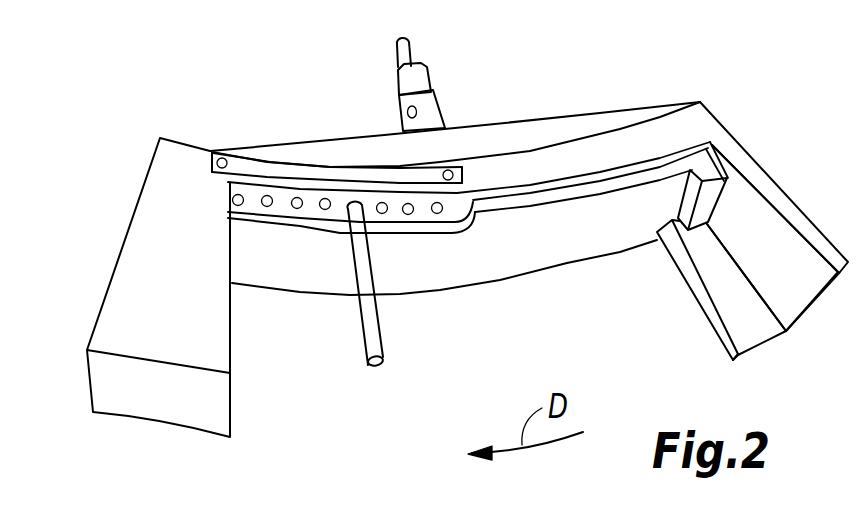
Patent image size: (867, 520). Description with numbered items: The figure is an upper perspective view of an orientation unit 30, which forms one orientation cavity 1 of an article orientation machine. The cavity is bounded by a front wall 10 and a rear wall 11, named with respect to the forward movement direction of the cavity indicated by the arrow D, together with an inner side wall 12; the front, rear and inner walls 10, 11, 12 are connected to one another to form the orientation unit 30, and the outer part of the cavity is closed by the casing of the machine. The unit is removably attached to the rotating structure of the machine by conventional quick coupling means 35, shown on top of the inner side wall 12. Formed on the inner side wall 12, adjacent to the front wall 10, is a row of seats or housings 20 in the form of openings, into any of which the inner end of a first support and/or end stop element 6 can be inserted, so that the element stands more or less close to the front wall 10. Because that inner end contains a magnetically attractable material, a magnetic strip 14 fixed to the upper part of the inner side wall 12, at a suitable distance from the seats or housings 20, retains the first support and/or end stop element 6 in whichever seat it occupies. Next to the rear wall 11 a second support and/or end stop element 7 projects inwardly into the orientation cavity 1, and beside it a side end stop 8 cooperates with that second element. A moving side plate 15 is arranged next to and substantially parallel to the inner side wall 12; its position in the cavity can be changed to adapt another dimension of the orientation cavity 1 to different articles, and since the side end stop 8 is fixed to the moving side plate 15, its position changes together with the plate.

The orientation cavity 1 is at (520, 368).
The first support and/or end stop element 6 is at (367, 333).
The second support and/or end stop element 7 is at (715, 287).
The side end stop 8 is at (707, 203).
The front wall 10 is at (232, 328).
The rear wall 11 is at (792, 284).
The inner side wall 12 is at (577, 160).
The magnetic strip 14 is at (298, 175).
The moving side plate 15 is at (567, 247).
The seats or housings 20 is at (408, 213).
The orientation unit 30 is at (527, 85).
The quick coupling means 35 is at (418, 80).